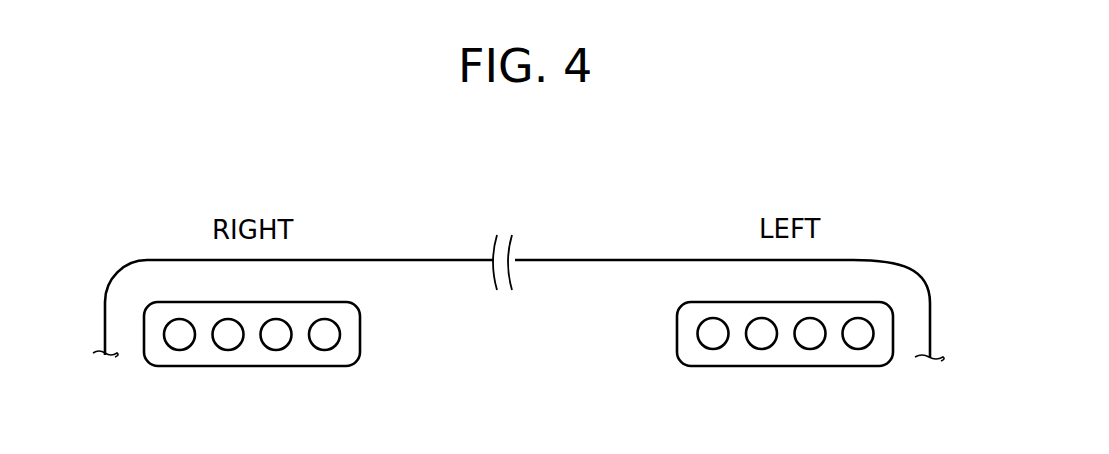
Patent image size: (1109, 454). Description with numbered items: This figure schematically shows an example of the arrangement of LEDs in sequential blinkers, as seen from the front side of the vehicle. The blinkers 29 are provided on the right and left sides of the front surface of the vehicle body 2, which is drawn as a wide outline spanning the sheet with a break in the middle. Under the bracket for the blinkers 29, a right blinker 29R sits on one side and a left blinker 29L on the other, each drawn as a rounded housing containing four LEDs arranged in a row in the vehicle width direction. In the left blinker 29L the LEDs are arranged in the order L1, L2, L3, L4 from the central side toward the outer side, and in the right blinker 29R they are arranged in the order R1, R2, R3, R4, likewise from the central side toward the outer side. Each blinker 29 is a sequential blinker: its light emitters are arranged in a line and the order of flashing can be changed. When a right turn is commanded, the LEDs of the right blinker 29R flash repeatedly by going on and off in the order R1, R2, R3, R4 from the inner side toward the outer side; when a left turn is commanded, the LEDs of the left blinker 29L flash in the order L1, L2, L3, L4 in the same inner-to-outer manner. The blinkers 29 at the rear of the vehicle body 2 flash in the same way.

The vehicle body 2 is at (921, 278).
The blinker 29 is at (698, 186).
The right blinker 29R is at (275, 310).
The left blinker 29L is at (769, 304).
The LED R1 is at (325, 350).
The LED R2 is at (276, 350).
The LED R3 is at (228, 350).
The LED R4 is at (182, 350).
The LED L1 is at (713, 349).
The LED L2 is at (761, 349).
The LED L3 is at (810, 349).
The LED L4 is at (858, 349).